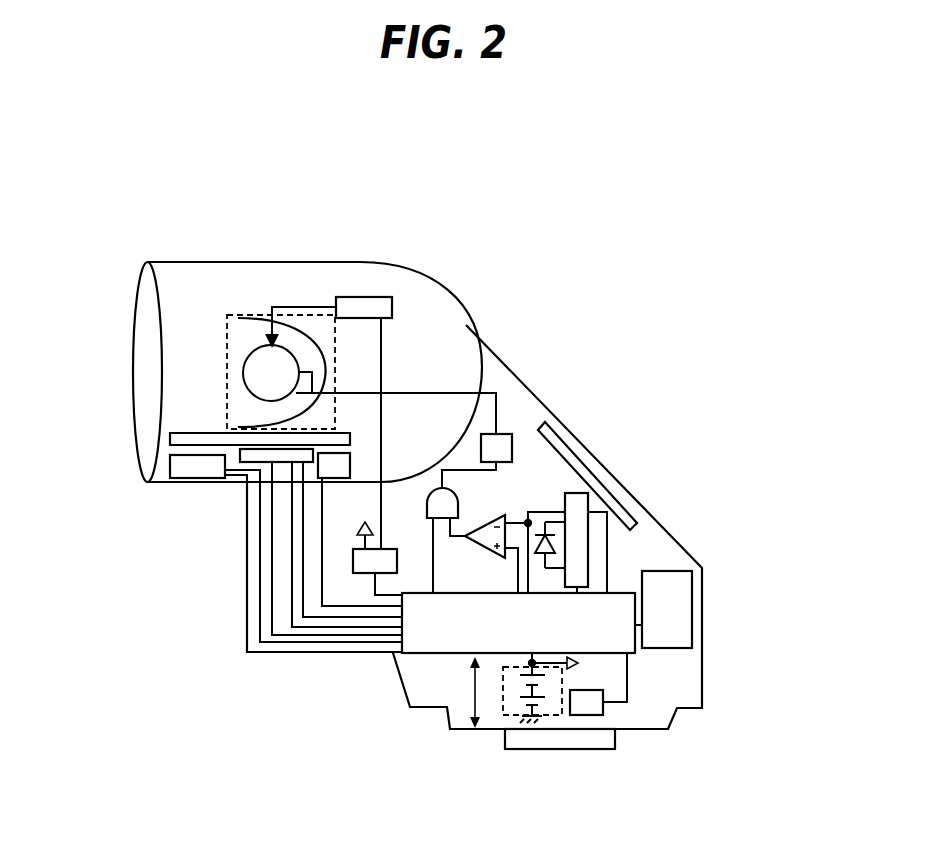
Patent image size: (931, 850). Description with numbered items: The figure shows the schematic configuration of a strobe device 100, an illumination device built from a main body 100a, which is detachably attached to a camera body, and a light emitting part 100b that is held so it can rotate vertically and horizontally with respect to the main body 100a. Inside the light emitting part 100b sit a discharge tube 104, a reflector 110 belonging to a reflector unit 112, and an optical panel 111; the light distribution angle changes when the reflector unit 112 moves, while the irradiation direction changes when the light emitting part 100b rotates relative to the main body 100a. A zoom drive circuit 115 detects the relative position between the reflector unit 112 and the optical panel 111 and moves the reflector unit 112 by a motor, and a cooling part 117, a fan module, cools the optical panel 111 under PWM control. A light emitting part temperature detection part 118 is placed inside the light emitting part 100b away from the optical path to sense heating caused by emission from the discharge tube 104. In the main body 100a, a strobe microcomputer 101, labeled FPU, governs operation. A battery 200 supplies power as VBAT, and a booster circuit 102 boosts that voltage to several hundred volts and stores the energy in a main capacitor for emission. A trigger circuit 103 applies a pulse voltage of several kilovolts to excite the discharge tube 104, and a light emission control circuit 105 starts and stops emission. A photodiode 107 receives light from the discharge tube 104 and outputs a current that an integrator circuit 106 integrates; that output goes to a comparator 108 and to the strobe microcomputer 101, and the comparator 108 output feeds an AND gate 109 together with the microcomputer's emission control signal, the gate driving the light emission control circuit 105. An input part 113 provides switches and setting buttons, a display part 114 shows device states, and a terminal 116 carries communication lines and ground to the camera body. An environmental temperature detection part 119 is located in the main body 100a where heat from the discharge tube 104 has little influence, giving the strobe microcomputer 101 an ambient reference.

The strobe device 100 is at (720, 325).
The main body 100a is at (702, 620).
The light emitting part 100b is at (353, 262).
The strobe microcomputer 101 is at (614, 640).
The booster circuit 102 is at (368, 562).
The trigger circuit 103 is at (395, 300).
The discharge tube 104 is at (260, 373).
The light emission control circuit 105 is at (500, 448).
The integrator circuit 106 is at (578, 552).
The photodiode 107 is at (557, 540).
The comparator 108 is at (486, 521).
The AND gate 109 is at (443, 500).
The reflector 110 is at (302, 335).
The optical panel 111 is at (147, 392).
The reflector unit 112 is at (335, 360).
The input part 113 is at (682, 570).
The display part 114 is at (580, 455).
The zoom drive circuit 115 is at (258, 458).
The terminal 116 is at (608, 738).
The cooling part 117 is at (192, 470).
The light emitting part temperature detection part 118 is at (338, 468).
The environmental temperature detection part 119 is at (588, 703).
The battery 200 is at (503, 703).